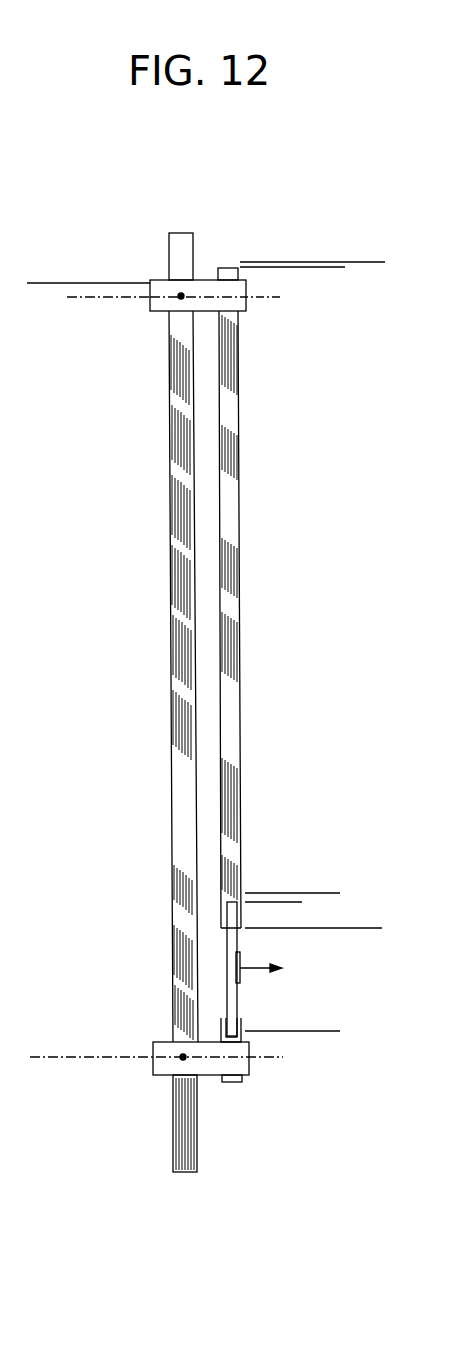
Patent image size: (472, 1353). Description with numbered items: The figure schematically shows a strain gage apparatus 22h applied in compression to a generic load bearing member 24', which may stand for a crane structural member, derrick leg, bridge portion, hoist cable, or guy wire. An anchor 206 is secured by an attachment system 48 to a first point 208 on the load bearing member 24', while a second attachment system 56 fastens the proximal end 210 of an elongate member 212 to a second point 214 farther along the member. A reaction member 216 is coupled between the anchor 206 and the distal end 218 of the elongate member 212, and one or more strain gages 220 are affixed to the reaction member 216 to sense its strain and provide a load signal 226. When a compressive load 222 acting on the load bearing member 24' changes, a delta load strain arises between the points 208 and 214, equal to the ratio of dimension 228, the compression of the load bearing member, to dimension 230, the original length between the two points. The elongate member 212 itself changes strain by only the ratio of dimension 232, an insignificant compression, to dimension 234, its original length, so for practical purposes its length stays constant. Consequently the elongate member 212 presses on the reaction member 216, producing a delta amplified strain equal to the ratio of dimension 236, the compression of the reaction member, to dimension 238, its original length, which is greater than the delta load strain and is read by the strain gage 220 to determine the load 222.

The strain gage apparatus 22h is at (58, 218).
The load bearing member 24' is at (155, 676).
The attachment system 48 is at (269, 1058).
The attachment system 56 is at (268, 298).
The anchor 206 is at (257, 1103).
The first point 208 is at (183, 1057).
The proximal end 210 is at (226, 268).
The elongate member 212 is at (240, 590).
The second point 214 is at (181, 296).
The reaction member 216 is at (226, 999).
The distal end 218 is at (226, 917).
The strain gage 220 is at (238, 962).
The compressive load 222 is at (182, 222).
The load signal 226 is at (253, 972).
The dimension 228 is at (89, 308).
The dimension 230 is at (44, 1045).
The dimension 232 is at (313, 280).
The dimension 234 is at (371, 916).
The dimension 236 is at (292, 913).
The dimension 238 is at (325, 905).